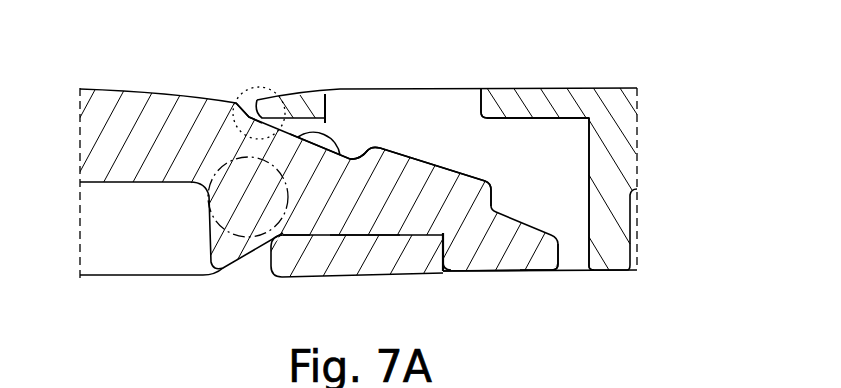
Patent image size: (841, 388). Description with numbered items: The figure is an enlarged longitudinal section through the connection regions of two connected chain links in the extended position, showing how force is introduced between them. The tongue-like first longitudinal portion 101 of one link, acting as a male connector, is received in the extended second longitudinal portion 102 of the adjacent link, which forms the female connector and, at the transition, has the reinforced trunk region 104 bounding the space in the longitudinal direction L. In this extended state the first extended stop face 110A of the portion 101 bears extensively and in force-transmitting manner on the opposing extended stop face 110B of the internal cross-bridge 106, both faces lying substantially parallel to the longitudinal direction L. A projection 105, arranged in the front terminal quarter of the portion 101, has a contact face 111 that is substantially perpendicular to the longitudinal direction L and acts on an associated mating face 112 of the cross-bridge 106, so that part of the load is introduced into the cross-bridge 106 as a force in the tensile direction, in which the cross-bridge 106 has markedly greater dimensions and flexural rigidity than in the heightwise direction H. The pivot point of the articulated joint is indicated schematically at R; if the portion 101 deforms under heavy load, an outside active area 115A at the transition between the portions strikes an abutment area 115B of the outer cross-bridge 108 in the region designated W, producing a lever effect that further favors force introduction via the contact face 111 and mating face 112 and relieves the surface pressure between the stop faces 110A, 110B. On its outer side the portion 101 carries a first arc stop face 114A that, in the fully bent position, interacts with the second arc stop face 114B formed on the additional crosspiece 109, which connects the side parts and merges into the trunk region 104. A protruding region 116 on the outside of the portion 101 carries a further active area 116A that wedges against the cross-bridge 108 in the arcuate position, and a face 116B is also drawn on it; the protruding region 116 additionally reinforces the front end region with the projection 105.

The first longitudinal portion 101 is at (378, 213).
The second longitudinal portion 102 is at (541, 181).
The trunk region 104 is at (630, 121).
The projection 105 is at (533, 258).
The cross-bridge 106 is at (400, 266).
The cross-bridge 108 is at (299, 107).
The crosspiece 109 is at (495, 102).
The first extended stop face 110A is at (358, 240).
The extended stop face 110B is at (308, 230).
The contact face 111 is at (440, 248).
The mating face 112 is at (448, 257).
The first arc stop face 114A is at (553, 230).
The second arc stop face 114B is at (522, 125).
The active area 115A is at (249, 103).
The abutment area 115B is at (242, 126).
The protruding region 116 is at (420, 170).
The further active area 116A is at (363, 146).
The latch face 116B is at (330, 110).
The region W is at (252, 102).
The longitudinal direction L is at (445, 38).
The heightwise direction H is at (670, 146).
The pivot point R is at (207, 202).